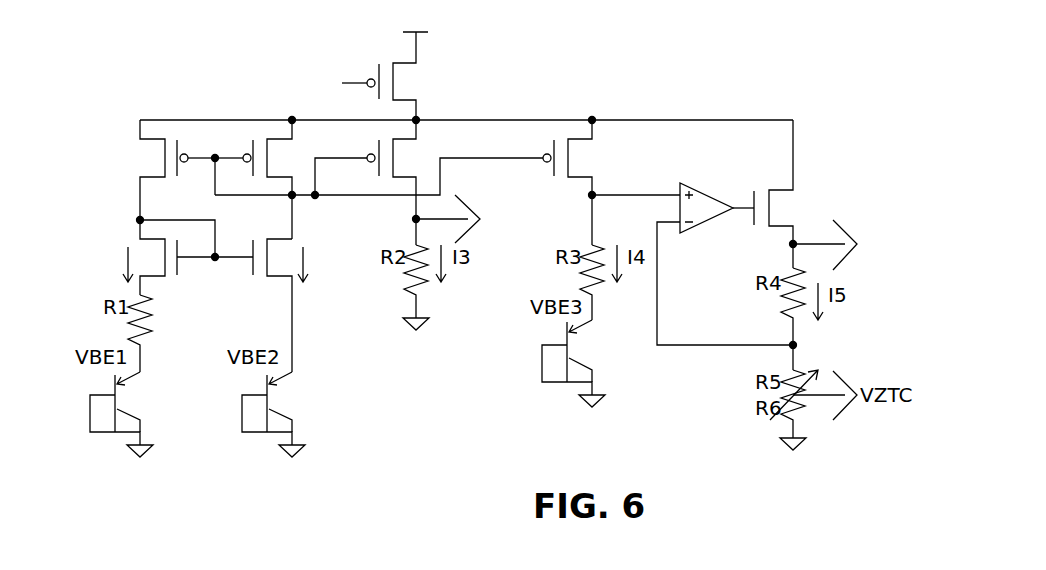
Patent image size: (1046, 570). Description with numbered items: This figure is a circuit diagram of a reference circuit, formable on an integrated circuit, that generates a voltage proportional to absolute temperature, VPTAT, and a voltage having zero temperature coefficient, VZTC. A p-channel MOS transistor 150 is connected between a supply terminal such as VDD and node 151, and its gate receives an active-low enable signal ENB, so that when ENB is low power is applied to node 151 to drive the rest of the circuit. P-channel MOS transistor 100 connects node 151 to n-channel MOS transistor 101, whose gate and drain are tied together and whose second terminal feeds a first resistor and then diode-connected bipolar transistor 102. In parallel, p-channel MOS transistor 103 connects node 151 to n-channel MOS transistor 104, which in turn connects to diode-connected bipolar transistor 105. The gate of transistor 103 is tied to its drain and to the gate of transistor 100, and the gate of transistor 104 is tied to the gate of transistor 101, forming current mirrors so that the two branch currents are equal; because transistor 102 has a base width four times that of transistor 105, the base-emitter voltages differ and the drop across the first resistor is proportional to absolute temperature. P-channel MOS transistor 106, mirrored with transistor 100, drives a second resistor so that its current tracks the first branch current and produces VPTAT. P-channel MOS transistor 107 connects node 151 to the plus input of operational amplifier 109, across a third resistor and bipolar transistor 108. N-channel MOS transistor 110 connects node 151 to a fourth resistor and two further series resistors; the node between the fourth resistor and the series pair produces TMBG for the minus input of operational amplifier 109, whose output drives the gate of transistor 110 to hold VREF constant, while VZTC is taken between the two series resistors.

The p-channel MOS transistor 100 is at (157, 139).
The n-channel MOS transistor 101 is at (152, 238).
The bipolar transistor 102 is at (117, 411).
The p-channel MOS transistor 103 is at (268, 141).
The n-channel MOS transistor 104 is at (268, 278).
The bipolar transistor 105 is at (267, 411).
The p-channel MOS transistor 106 is at (395, 150).
The p-channel MOS transistor 107 is at (569, 153).
The bipolar transistor 108 is at (566, 362).
The operational amplifier 109 is at (687, 182).
The n-channel MOS transistor 110 is at (775, 190).
The p-channel MOS transistor 150 is at (393, 63).
The node 151 is at (418, 119).